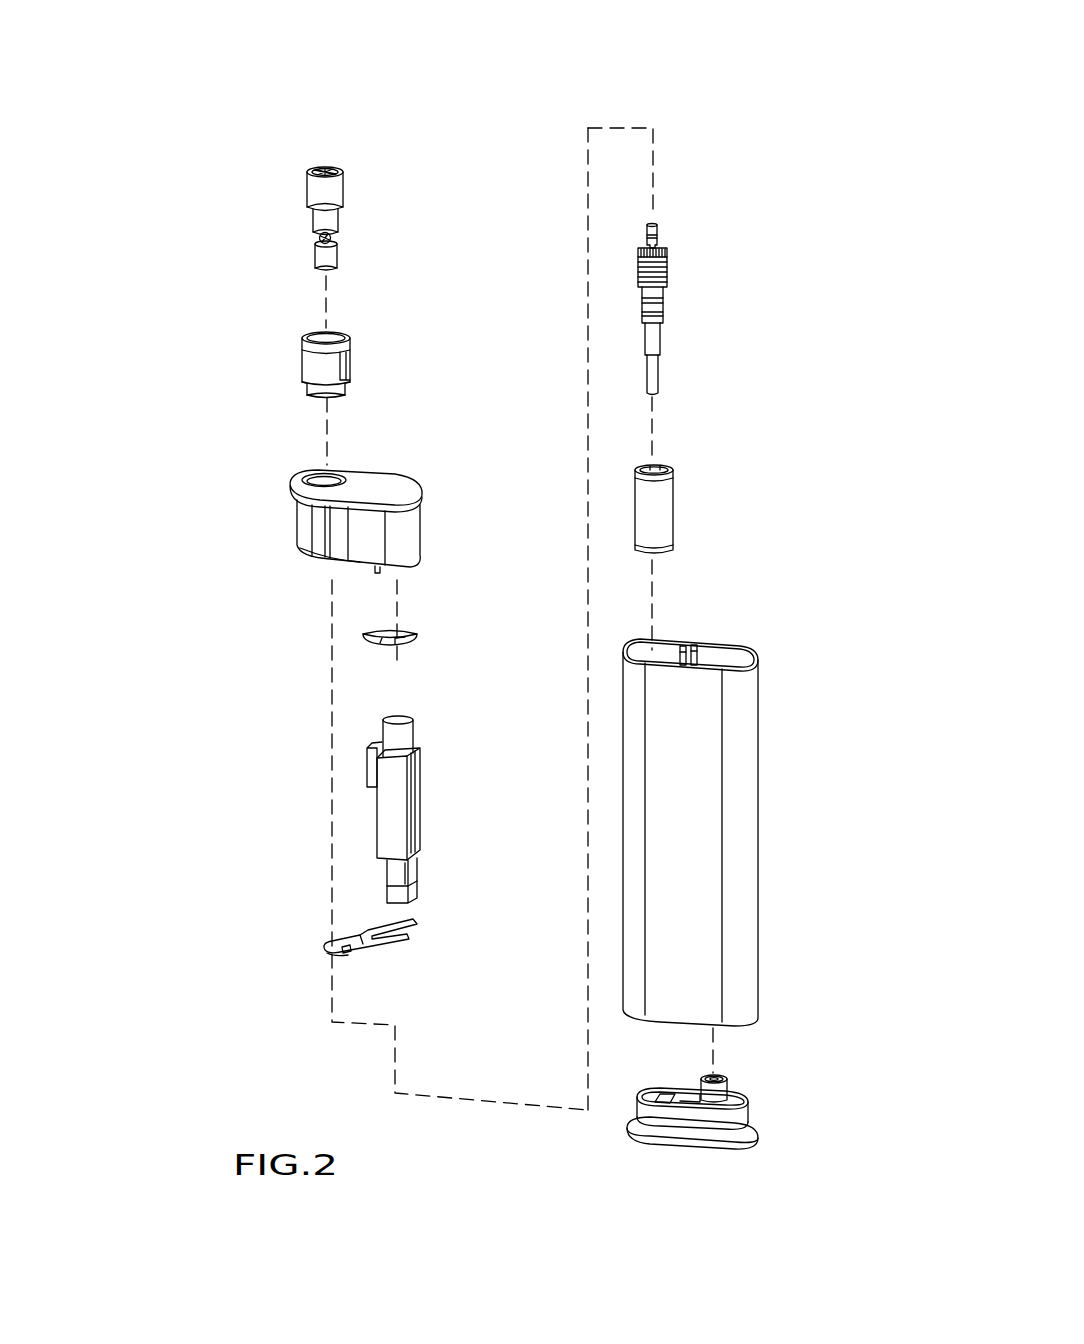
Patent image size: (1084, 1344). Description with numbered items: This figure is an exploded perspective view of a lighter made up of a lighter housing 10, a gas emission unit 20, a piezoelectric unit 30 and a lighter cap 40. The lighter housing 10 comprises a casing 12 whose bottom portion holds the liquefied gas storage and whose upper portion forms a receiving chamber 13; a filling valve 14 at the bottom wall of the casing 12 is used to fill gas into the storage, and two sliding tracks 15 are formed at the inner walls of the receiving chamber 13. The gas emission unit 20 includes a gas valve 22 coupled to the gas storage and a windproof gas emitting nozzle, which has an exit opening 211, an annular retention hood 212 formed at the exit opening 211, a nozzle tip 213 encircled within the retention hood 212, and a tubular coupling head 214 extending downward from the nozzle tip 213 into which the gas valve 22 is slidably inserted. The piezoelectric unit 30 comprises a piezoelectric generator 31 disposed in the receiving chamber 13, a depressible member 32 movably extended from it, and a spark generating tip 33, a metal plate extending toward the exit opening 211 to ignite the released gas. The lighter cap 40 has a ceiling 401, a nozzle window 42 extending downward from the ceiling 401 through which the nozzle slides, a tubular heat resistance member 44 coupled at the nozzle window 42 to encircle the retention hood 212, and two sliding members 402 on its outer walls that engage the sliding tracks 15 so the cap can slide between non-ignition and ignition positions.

The lighter housing 10 is at (855, 875).
The casing 12 is at (747, 970).
The receiving chamber 13 is at (732, 648).
The filling valve 14 is at (716, 1092).
The sliding tracks 15 is at (693, 636).
The gas emission unit 20 is at (492, 96).
The gas valve 22 is at (660, 230).
The exit opening 211 is at (314, 165).
The annular retention hood 212 is at (335, 192).
The nozzle tip 213 is at (335, 172).
The tubular coupling head 214 is at (336, 256).
The piezoelectric unit 30 is at (517, 527).
The piezoelectric generator 31 is at (410, 792).
The depressible member 32 is at (412, 878).
The spark generating tip 33 is at (413, 637).
The lighter cap 40 is at (197, 593).
The ceiling 401 is at (391, 479).
The sliding members 402 is at (326, 560).
The nozzle window 42 is at (300, 467).
The tubular heat resistance member 44 is at (300, 355).